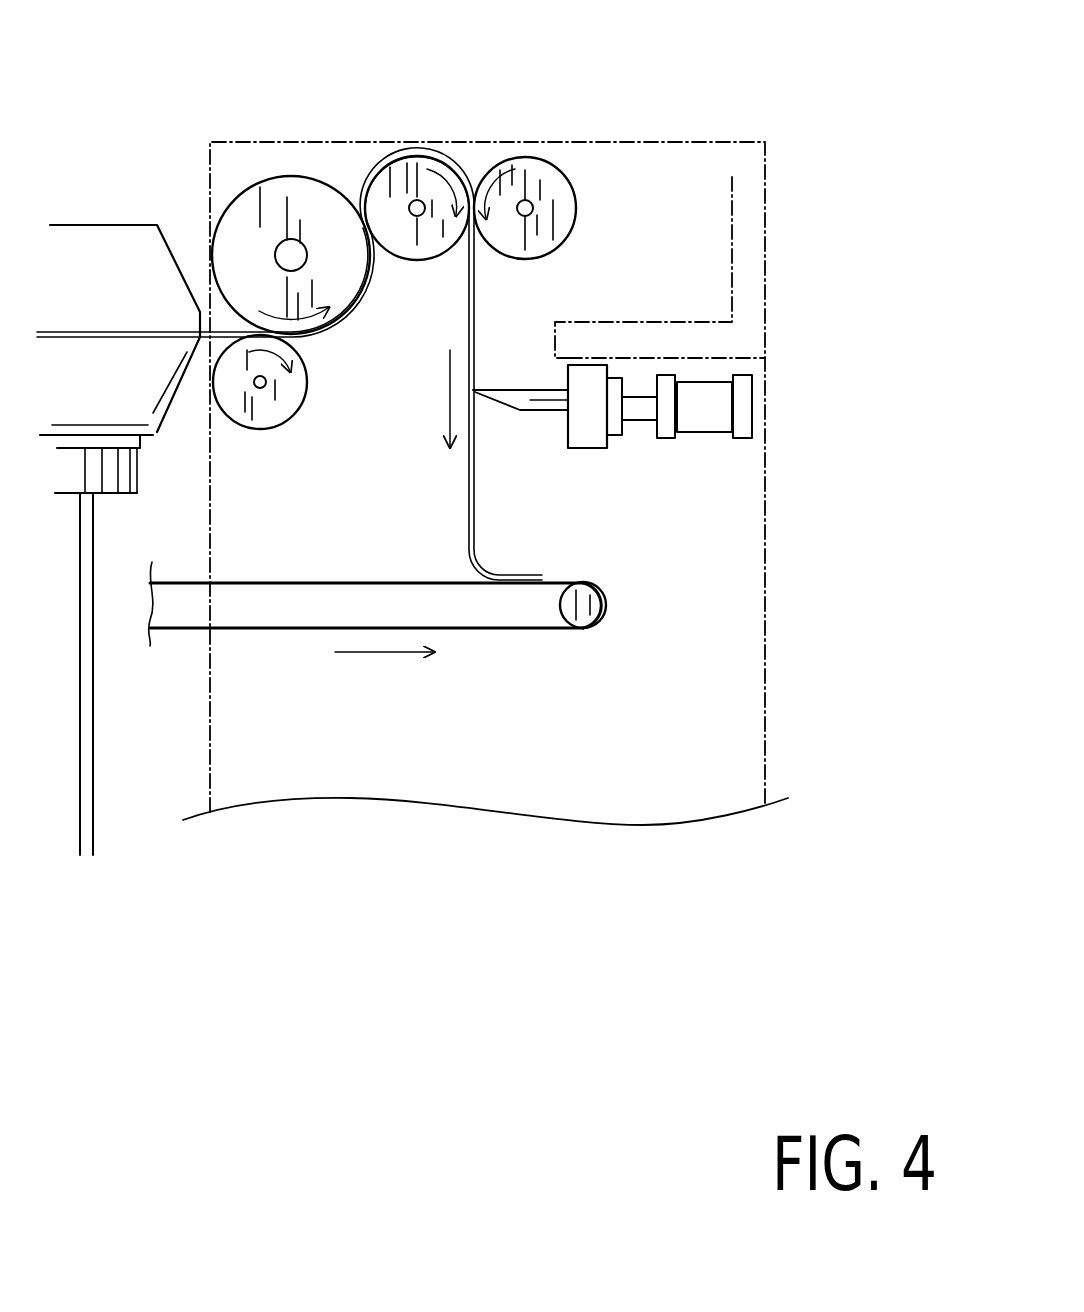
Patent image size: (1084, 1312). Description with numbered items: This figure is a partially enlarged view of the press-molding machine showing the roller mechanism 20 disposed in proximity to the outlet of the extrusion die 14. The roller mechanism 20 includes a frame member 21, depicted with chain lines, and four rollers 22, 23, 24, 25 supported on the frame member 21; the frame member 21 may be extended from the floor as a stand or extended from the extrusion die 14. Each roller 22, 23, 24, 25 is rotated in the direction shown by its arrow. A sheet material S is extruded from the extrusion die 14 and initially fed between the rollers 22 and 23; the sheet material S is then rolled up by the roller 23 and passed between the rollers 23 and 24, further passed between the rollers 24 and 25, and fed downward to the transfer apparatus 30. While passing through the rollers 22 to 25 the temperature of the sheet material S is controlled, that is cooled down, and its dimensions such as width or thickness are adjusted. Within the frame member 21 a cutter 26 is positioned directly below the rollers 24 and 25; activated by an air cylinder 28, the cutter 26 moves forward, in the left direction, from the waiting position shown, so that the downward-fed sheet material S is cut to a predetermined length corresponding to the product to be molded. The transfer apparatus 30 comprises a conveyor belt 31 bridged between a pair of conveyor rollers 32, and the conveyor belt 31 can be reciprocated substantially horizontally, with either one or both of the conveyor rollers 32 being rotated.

The extrusion die 14 is at (97, 247).
The roller mechanism 20 is at (579, 106).
The frame member 21 is at (765, 573).
The roller 22 is at (245, 432).
The roller 23 is at (310, 205).
The roller 24 is at (423, 177).
The roller 25 is at (550, 192).
The cutter 26 is at (540, 407).
The air cylinder 28 is at (705, 413).
The transfer apparatus 30 is at (272, 642).
The conveyor belt 31 is at (490, 630).
The conveyor roller 32 is at (588, 632).
The sheet material S is at (463, 293).